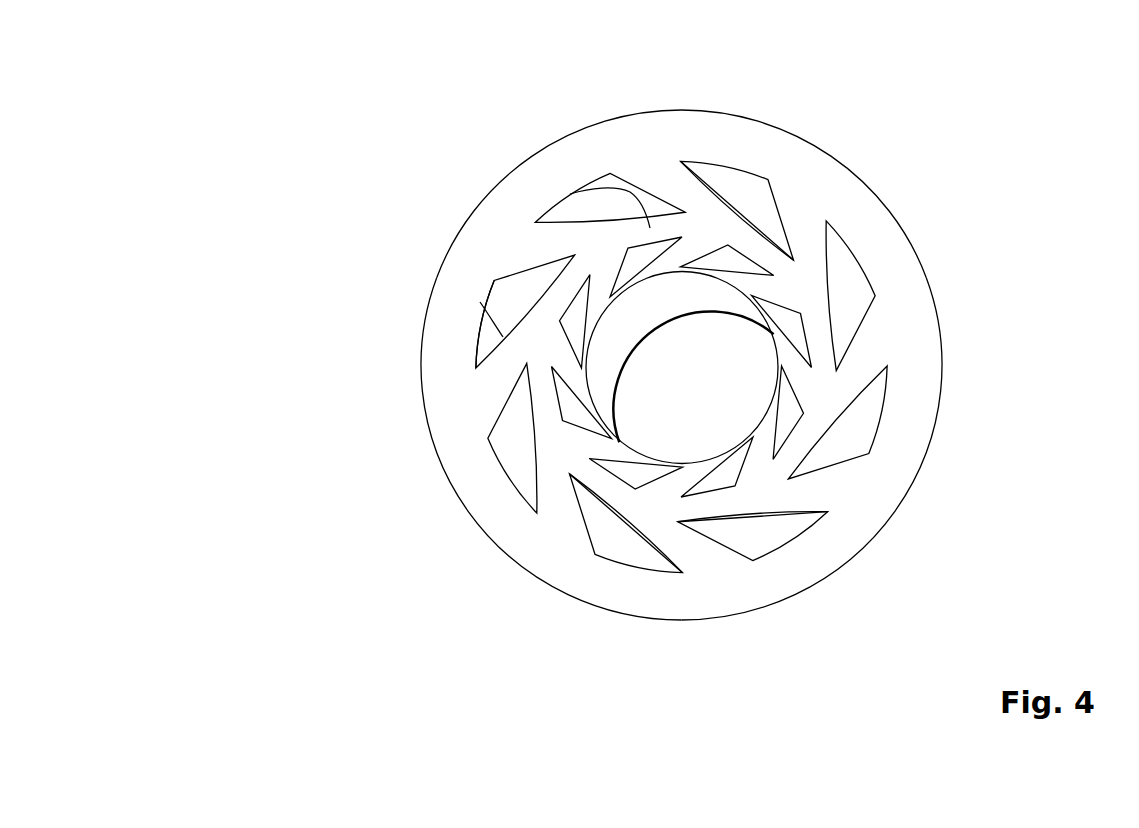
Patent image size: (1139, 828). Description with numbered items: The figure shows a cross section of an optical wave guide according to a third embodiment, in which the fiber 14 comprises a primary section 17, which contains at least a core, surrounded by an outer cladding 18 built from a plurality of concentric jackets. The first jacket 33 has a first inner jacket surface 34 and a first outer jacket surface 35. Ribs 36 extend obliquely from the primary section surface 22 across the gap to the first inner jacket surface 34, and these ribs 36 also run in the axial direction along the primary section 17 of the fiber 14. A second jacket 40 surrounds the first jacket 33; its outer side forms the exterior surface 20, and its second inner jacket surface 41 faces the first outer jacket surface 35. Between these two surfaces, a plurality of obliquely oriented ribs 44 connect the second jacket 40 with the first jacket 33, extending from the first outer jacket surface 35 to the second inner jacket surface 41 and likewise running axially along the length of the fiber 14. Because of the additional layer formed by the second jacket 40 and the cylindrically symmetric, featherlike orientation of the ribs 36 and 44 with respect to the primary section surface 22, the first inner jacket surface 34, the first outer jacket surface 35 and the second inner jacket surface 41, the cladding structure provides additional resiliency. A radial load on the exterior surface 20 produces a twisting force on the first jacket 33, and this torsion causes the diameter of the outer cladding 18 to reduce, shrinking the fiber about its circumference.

The fiber 14 is at (280, 172).
The exterior surface 20 is at (810, 141).
The second jacket 40 is at (713, 138).
The outer cladding 18 is at (562, 532).
The first jacket 33 is at (575, 194).
The first outer jacket surface 35 is at (548, 283).
The ribs 44 is at (480, 302).
The second inner jacket surface 41 is at (866, 266).
The ribs 36 is at (757, 287).
The first inner jacket surface 34 is at (787, 392).
The primary section surface 22 is at (737, 440).
The primary section 17 is at (643, 380).